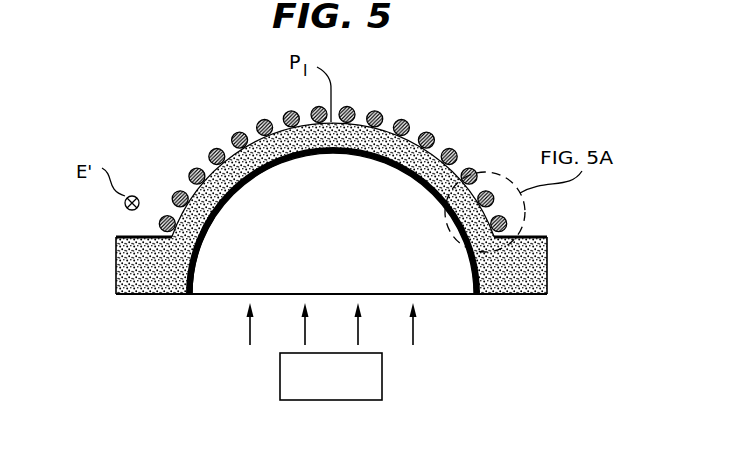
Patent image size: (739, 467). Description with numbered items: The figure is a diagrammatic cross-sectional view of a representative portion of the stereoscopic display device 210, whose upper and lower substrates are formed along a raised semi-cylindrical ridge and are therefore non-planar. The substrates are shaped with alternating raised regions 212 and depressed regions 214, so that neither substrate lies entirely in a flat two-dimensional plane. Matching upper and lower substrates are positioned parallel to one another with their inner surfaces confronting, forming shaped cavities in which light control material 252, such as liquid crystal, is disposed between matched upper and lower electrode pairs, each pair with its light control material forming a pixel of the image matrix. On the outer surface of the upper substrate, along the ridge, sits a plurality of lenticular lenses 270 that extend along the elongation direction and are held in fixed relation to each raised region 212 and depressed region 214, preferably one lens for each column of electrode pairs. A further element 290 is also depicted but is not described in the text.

The stereoscopic display device 210 is at (331, 172).
The raised region 212 is at (345, 162).
The depressed region 214 is at (226, 219).
The light control material 252 is at (424, 163).
The lenticular lenses 270 is at (401, 121).
The light source 290 is at (382, 375).